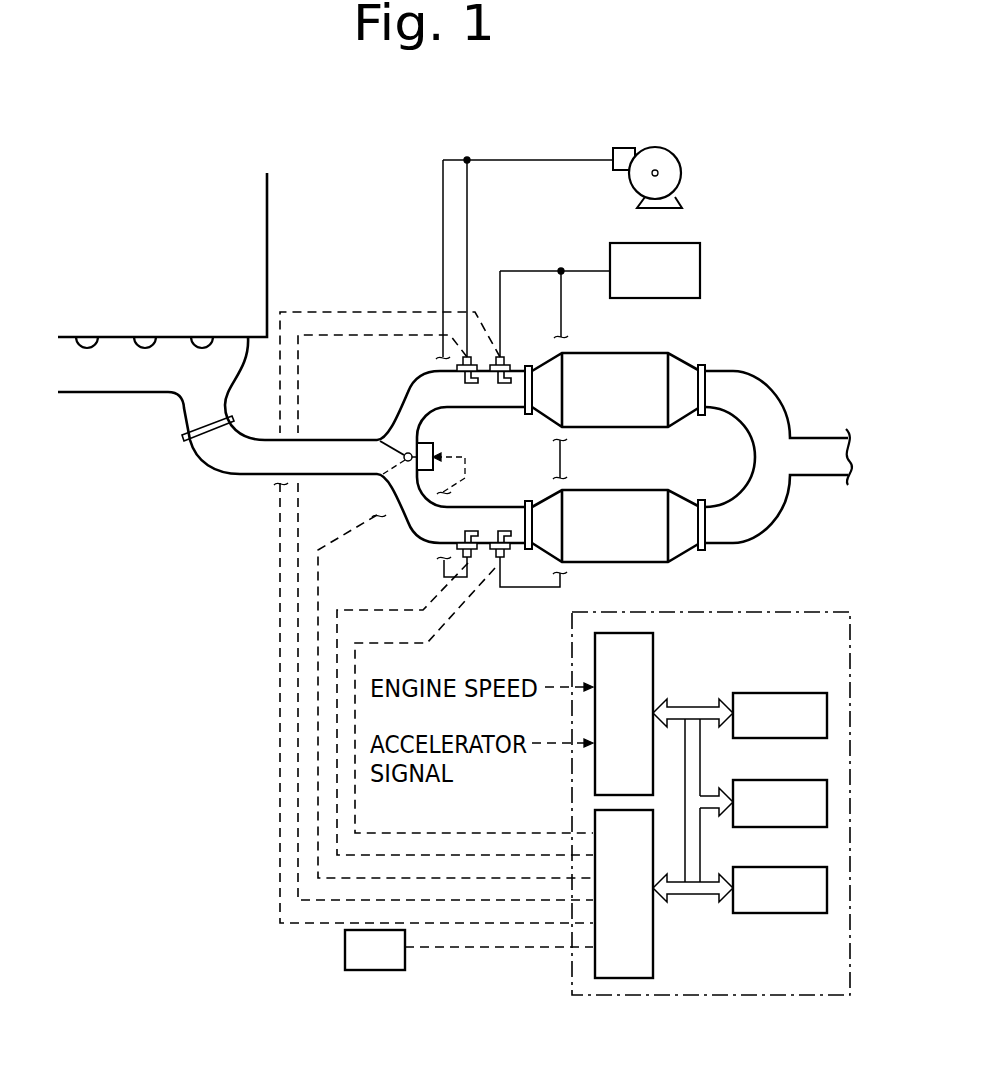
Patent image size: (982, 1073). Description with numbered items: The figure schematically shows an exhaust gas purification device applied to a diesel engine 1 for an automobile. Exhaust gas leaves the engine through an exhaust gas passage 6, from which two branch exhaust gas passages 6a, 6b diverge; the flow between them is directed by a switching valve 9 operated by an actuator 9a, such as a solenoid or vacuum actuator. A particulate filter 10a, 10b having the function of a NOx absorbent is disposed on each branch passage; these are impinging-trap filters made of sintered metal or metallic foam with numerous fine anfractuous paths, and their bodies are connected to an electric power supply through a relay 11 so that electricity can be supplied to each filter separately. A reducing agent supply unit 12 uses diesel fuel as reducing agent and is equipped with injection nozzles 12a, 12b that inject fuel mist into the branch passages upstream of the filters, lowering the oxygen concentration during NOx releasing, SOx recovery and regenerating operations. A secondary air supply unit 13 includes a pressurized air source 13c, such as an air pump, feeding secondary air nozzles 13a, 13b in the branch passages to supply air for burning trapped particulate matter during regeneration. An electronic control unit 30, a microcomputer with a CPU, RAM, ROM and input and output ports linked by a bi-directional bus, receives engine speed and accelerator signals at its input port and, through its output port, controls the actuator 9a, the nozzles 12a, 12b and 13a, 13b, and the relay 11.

The diesel engine 1 is at (268, 193).
The exhaust gas passage 6 is at (232, 470).
The branch exhaust gas passage 6a is at (416, 386).
The branch exhaust gas passage 6b is at (410, 534).
The switching valve 9 is at (386, 428).
The actuator 9a is at (426, 442).
The particulate filter (DPF) 10a is at (632, 425).
The particulate filter (DPF) 10b is at (638, 500).
The relay 11 is at (390, 963).
The reducing agent supply unit 12 is at (704, 271).
The injection nozzle 12a is at (505, 357).
The injection nozzle 12b is at (505, 530).
The secondary air supply unit 13 is at (523, 150).
The secondary air nozzle 13a is at (472, 385).
The secondary air nozzle 13b is at (478, 512).
The pressurized air source 13c is at (682, 173).
The electronic control unit (ECU) 30 is at (793, 997).